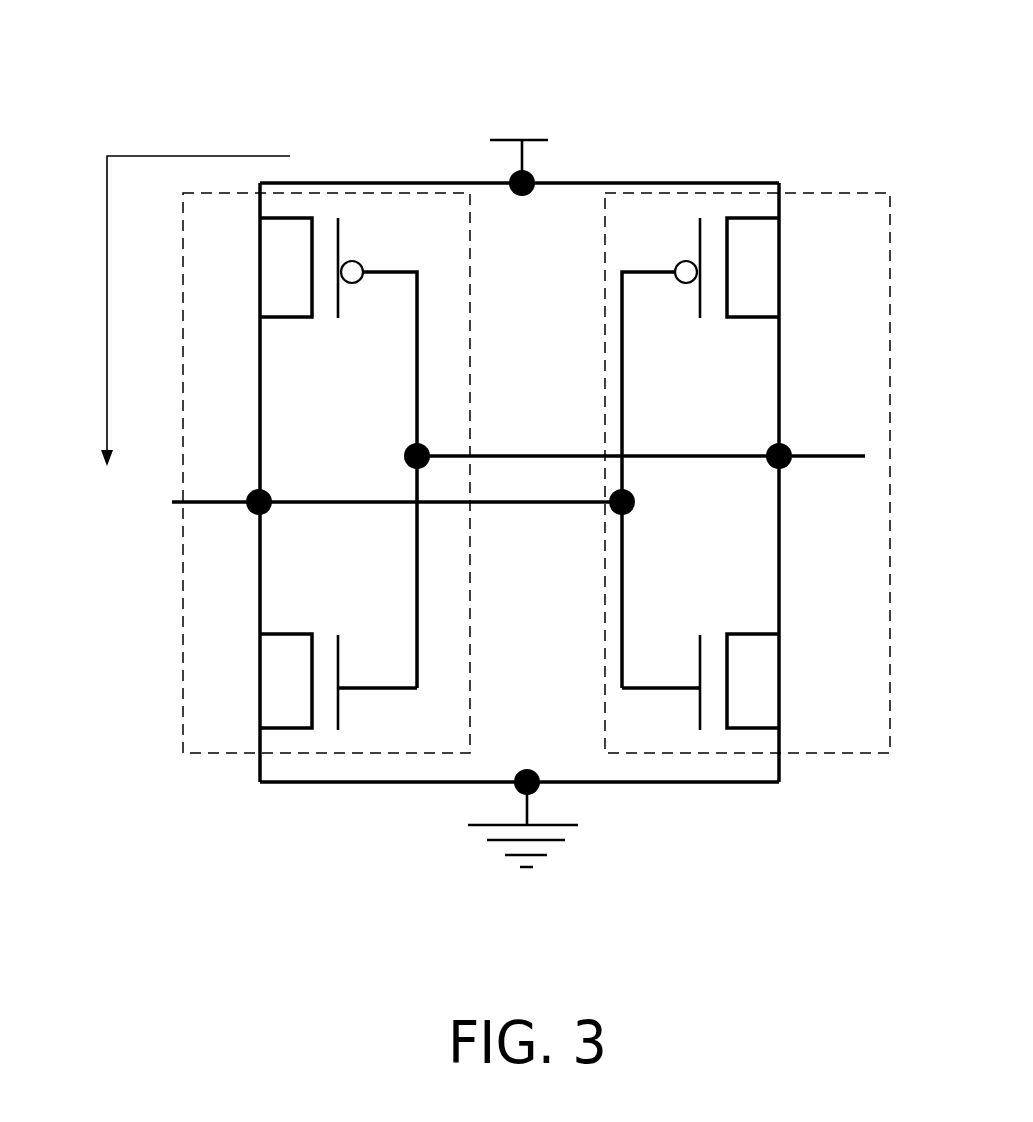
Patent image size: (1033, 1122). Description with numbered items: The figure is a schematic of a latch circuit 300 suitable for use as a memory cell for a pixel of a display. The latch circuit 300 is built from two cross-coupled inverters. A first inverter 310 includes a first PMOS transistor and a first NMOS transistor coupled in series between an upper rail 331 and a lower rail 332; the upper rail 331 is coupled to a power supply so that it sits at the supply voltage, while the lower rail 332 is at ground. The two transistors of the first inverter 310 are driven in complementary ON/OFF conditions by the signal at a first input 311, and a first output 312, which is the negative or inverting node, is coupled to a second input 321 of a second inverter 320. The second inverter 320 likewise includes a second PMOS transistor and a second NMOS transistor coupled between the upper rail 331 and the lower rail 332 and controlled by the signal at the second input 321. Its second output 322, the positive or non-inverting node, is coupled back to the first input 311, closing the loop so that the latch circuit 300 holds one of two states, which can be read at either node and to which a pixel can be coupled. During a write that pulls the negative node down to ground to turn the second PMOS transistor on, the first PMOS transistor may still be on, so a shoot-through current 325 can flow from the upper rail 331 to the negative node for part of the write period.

The latch circuit 300 is at (130, 50).
The first inverter 310 is at (212, 192).
The first input 311 is at (385, 456).
The first output 312 is at (232, 475).
The second inverter 320 is at (837, 190).
The second input 321 is at (648, 502).
The second output 322 is at (818, 446).
The shoot-through current 325 is at (107, 242).
The upper rail 331 is at (443, 180).
The lower rail 332 is at (652, 785).